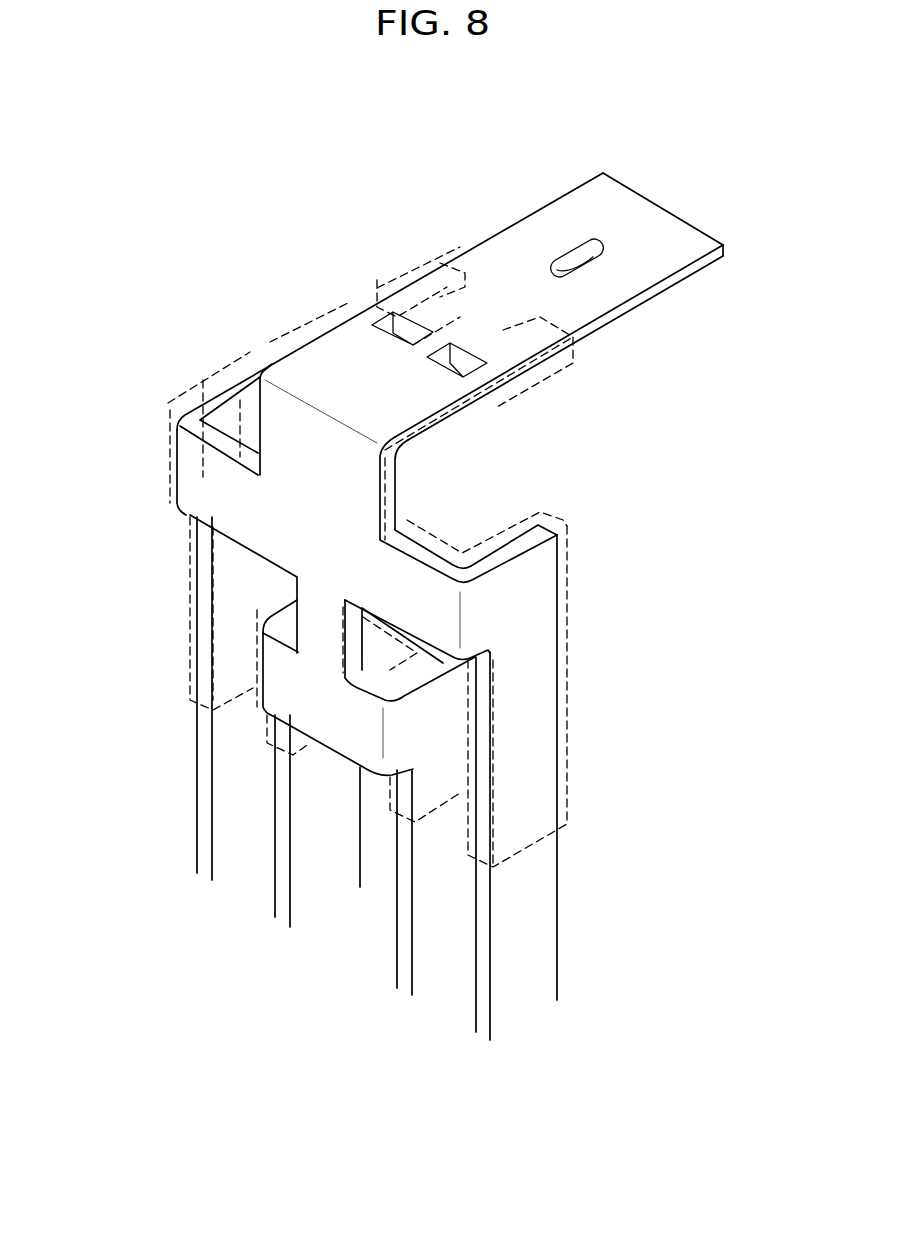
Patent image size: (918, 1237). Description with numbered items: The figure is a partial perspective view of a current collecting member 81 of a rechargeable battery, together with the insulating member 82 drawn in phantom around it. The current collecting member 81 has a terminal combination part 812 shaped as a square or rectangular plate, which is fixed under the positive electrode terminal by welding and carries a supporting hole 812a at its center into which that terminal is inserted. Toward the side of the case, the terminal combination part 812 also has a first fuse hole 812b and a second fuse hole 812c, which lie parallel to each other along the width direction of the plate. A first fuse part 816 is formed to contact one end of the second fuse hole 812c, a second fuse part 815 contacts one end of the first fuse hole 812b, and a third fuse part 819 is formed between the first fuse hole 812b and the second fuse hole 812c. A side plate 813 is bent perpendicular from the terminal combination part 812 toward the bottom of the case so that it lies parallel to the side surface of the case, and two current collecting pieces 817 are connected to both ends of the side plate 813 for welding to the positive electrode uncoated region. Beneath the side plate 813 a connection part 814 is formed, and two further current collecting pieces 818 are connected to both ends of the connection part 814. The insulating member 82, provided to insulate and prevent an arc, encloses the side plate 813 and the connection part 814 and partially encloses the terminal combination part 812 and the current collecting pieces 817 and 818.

The current collecting member 81 is at (563, 190).
The insulating member 82 is at (217, 370).
The terminal combination part 812 is at (633, 217).
The supporting hole 812a is at (583, 263).
The first fuse hole 812b is at (387, 313).
The second fuse hole 812c is at (468, 353).
The side plate 813 is at (317, 497).
The connection part 814 is at (320, 675).
The second fuse part 815 is at (380, 317).
The first fuse part 816 is at (487, 375).
The current collecting pieces 817 is at (517, 895).
The current collecting pieces 818 is at (438, 943).
The third fuse part 819 is at (440, 337).